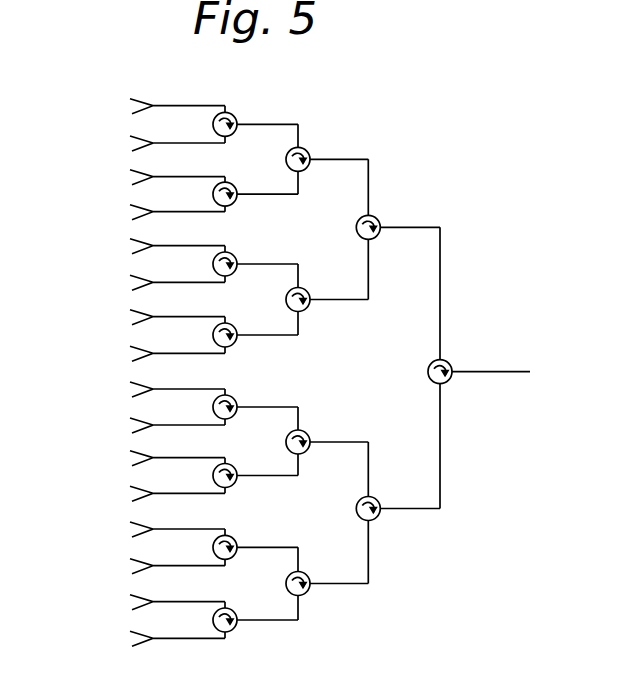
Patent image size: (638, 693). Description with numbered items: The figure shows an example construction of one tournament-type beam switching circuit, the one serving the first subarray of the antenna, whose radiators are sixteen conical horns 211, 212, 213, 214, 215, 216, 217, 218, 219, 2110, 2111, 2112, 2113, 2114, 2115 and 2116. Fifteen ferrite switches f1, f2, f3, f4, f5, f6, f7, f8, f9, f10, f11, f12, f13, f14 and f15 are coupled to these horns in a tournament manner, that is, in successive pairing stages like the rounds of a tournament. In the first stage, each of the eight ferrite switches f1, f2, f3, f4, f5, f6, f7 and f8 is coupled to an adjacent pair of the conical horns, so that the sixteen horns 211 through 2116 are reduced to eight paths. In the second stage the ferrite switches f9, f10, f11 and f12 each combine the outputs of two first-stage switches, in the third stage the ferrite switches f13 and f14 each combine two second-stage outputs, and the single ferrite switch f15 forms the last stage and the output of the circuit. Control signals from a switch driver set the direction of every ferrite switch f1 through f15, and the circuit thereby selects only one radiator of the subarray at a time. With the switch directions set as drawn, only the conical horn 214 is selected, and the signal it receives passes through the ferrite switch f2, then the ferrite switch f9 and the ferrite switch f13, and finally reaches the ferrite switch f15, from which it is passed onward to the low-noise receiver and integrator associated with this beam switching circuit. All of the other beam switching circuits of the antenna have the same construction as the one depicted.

The conical horn 211 is at (131, 111).
The conical horn 212 is at (131, 148).
The conical horn 213 is at (131, 182).
The conical horn 214 is at (131, 217).
The conical horn 215 is at (131, 251).
The conical horn 216 is at (131, 287).
The conical horn 217 is at (131, 322).
The conical horn 218 is at (131, 358).
The conical horn 219 is at (131, 394).
The conical horn 2110 is at (131, 430).
The conical horn 2111 is at (131, 463).
The conical horn 2112 is at (131, 498).
The conical horn 2113 is at (131, 534).
The conical horn 2114 is at (131, 571).
The conical horn 2115 is at (131, 607).
The conical horn 2116 is at (131, 643).
The ferrite switch f1 is at (239, 114).
The ferrite switch f2 is at (241, 184).
The ferrite switch f3 is at (239, 253).
The ferrite switch f4 is at (241, 322).
The ferrite switch f5 is at (242, 395).
The ferrite switch f6 is at (239, 461).
The ferrite switch f7 is at (241, 535).
The ferrite switch f8 is at (237, 605).
The ferrite switch f9 is at (313, 145).
The ferrite switch f10 is at (319, 287).
The ferrite switch f11 is at (316, 428).
The ferrite switch f12 is at (317, 570).
The ferrite switch f13 is at (387, 211).
The ferrite switch f14 is at (385, 495).
The ferrite switch f15 is at (461, 358).